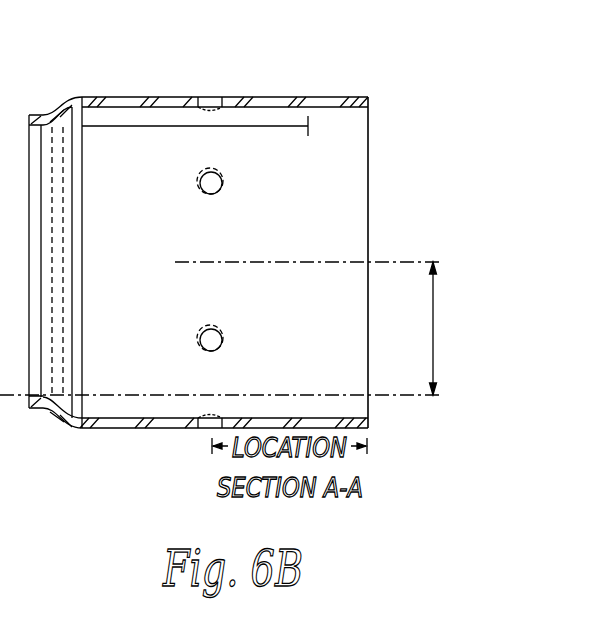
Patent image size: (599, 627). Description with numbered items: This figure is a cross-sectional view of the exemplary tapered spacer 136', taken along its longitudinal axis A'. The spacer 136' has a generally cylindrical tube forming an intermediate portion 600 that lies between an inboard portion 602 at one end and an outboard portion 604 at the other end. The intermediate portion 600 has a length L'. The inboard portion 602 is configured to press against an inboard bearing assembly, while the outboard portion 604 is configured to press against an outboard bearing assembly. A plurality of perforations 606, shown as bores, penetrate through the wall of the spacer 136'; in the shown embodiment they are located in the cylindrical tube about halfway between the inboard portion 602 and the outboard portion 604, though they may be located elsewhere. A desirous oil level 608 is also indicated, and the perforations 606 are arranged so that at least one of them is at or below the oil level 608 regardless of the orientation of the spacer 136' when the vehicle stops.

The intermediate portion 600 is at (231, 255).
The spacer 136' is at (205, 71).
The length L' is at (195, 85).
The inboard portion 602 is at (369, 101).
The outboard portion 604 is at (44, 410).
The perforations 606 is at (199, 343).
The longitudinal axis A' is at (220, 283).
The oil level 608 is at (388, 394).